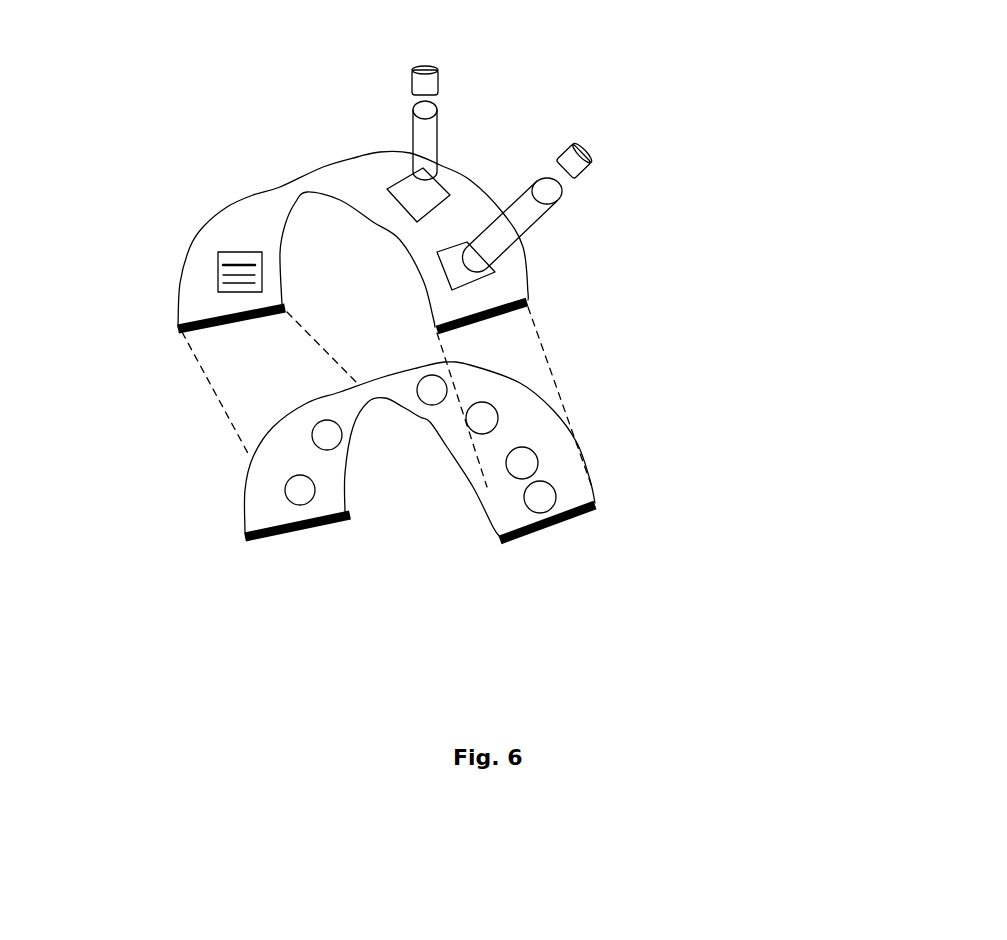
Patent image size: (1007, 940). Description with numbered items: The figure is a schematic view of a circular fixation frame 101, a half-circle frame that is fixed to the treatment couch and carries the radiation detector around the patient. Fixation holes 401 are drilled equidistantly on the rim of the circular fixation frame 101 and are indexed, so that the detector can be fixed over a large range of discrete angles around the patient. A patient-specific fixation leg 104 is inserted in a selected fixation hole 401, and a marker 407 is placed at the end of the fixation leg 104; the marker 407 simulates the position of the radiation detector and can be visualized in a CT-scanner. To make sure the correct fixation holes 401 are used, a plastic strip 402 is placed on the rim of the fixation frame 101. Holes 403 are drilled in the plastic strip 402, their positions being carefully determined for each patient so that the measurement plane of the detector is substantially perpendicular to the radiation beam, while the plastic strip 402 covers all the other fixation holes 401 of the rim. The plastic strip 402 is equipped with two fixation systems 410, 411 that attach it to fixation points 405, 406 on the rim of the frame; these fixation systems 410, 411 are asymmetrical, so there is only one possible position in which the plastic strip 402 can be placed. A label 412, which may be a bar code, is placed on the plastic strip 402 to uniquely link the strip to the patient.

The circular fixation frame 101 is at (267, 512).
The fixation leg 104 is at (415, 137).
The fixation holes 401 is at (320, 435).
The plastic strip 402 is at (517, 267).
The holes 403 is at (417, 225).
The fixation point 405 is at (563, 523).
The fixation point 406 is at (280, 535).
The markers 407 is at (437, 82).
The fixation system 410 is at (508, 315).
The fixation system 411 is at (180, 322).
The label 412 is at (233, 257).